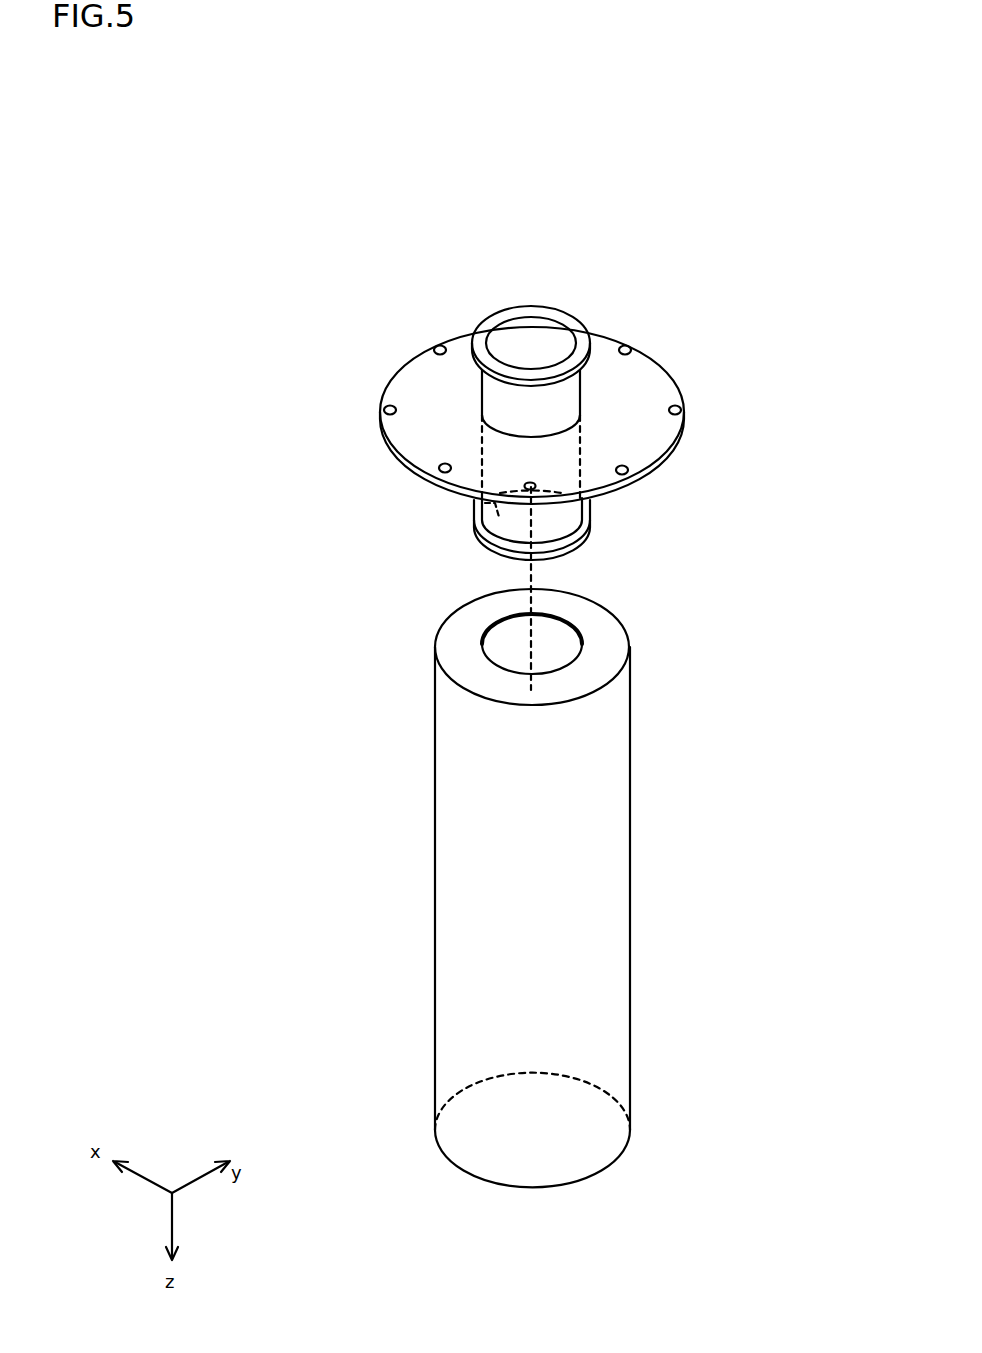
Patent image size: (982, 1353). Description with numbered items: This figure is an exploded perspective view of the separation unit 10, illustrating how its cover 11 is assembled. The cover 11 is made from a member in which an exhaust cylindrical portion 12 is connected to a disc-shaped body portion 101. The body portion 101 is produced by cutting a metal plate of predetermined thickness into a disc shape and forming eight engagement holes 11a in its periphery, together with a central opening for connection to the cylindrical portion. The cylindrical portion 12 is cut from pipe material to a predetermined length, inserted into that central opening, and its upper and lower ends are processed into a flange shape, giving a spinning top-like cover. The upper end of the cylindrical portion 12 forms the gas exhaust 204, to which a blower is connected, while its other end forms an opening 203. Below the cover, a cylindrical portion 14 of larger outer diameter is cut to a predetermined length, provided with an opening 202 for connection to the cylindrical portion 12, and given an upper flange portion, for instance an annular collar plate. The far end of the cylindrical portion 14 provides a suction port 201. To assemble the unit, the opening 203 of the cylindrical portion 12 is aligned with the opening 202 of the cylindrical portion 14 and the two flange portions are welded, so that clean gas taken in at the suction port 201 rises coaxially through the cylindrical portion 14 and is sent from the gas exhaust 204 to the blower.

The separation unit 10 is at (217, 284).
The cover 11 is at (669, 373).
The body portion 101 is at (395, 366).
The engagement holes 11a is at (686, 410).
The gas exhaust 204 is at (566, 345).
The exhaust cylindrical portion 12 is at (589, 503).
The opening 203 is at (473, 520).
The cylindrical portion 14 is at (632, 902).
The suction port 201 is at (618, 1098).
The opening 202 is at (574, 637).